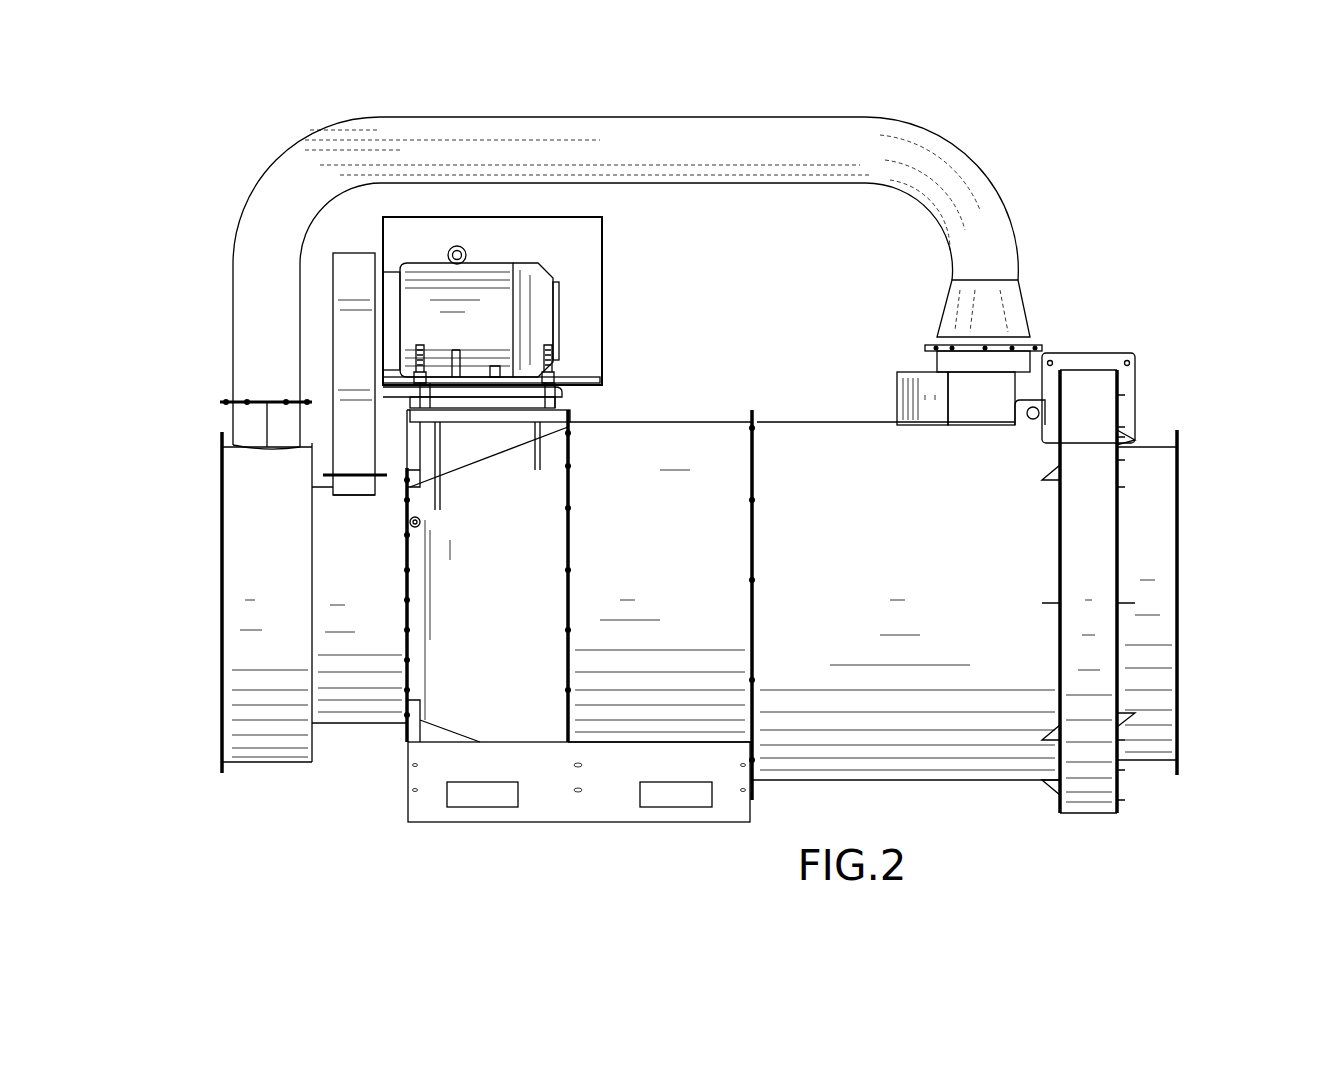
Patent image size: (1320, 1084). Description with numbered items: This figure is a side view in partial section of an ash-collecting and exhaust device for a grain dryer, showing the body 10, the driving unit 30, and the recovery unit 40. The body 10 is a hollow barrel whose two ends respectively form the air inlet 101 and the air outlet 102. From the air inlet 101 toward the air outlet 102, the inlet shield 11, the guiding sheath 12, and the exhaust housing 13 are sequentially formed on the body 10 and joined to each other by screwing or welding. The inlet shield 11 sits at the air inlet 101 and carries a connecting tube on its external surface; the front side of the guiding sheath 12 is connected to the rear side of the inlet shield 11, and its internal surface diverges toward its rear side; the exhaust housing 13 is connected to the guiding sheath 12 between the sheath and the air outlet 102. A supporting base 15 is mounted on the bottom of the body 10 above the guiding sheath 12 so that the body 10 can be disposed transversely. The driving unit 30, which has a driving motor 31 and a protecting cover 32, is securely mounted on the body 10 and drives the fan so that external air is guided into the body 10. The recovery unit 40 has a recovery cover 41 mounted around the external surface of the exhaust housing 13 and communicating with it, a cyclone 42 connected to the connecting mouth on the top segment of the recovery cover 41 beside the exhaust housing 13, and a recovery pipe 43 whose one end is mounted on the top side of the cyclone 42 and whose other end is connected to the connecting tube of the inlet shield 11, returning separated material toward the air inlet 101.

The body 10 is at (707, 396).
The inlet shield 11 is at (280, 768).
The guiding sheath 12 is at (544, 561).
The exhaust housing 13 is at (1000, 788).
The supporting base 15 is at (557, 807).
The driving unit 30 is at (539, 308).
The driving motor 31 is at (560, 310).
The protecting cover 32 is at (345, 350).
The recovery unit 40 is at (1112, 285).
The recovery cover 41 is at (1116, 785).
The cyclone 42 is at (920, 412).
The recovery pipe 43 is at (990, 236).
The air inlet 101 is at (222, 597).
The air outlet 102 is at (1177, 580).